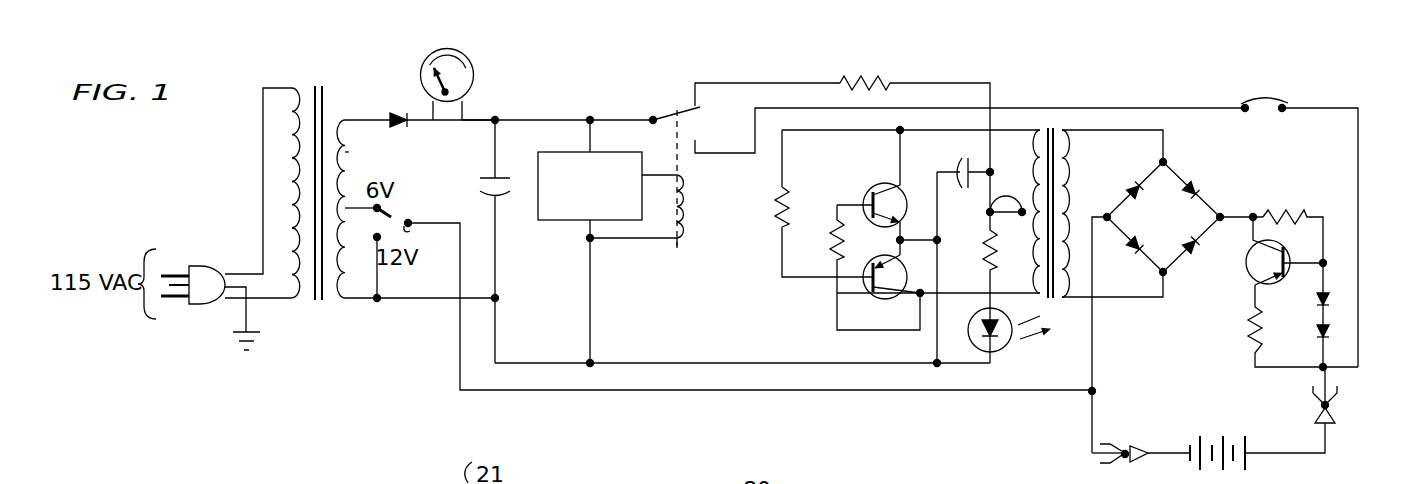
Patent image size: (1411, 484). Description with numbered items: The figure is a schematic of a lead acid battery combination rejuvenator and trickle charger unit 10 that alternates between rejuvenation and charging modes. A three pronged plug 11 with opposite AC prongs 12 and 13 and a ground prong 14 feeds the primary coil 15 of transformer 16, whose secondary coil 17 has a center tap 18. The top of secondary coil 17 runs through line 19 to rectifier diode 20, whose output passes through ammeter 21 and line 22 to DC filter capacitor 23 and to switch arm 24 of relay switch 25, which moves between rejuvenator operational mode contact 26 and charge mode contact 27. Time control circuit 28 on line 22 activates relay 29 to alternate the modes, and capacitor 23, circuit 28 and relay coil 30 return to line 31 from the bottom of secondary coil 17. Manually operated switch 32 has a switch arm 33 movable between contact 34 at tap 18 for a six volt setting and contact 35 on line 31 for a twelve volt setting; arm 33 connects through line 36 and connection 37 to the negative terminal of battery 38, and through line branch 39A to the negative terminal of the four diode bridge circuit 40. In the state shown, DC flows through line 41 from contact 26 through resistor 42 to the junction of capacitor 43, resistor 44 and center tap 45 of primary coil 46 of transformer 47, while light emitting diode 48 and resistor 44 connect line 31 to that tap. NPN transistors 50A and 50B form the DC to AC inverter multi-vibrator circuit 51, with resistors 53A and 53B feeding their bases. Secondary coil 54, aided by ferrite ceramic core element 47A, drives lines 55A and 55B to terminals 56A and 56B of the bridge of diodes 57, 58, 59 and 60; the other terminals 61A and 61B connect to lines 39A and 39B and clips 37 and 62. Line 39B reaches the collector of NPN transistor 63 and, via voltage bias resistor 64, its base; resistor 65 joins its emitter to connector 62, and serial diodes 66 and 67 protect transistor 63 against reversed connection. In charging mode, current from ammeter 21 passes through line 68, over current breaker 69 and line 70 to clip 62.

The lead acid battery combination rejuvenator and trickle charger unit 10 is at (1200, 92).
The three pronged plug 11 is at (217, 265).
The AC prong 12 is at (170, 274).
The AC prong 13 is at (168, 300).
The ground prong 14 is at (181, 298).
The primary coil 15 is at (296, 164).
The transformer 16 is at (309, 78).
The secondary coil 17 is at (350, 156).
The center tap 18 is at (350, 207).
The line 19 is at (354, 118).
The rectifier diode 20 is at (400, 108).
The ammeter 21 is at (473, 68).
The line 22 is at (478, 118).
The DC filter capacitor 23 is at (484, 168).
The switch arm 24 is at (668, 113).
The relay switch 25 is at (668, 90).
The rejuvenator operational mode contact 26 is at (695, 101).
The charge mode contact 27 is at (698, 138).
The time control circuit 28 is at (555, 222).
The relay 29 is at (690, 198).
The relay coil 30 is at (684, 233).
The line 31 is at (401, 302).
The manually operated switch 32 is at (411, 218).
The switch arm 33 is at (409, 226).
The contact 34 is at (383, 204).
The contact 35 is at (375, 243).
The line 36 is at (458, 350).
The connection 37 is at (1125, 448).
The battery 38 is at (1227, 432).
The line branch 39A is at (1090, 425).
The line 39B is at (1233, 223).
The four diode bridge circuit 40 is at (1203, 172).
The line 41 is at (790, 82).
The resistor 42 is at (884, 73).
The capacitor 43 is at (955, 165).
The resistor 44 is at (984, 250).
The center tap 45 is at (988, 198).
The primary coil 46 is at (1030, 190).
The transformer 47 is at (1050, 126).
The ferrite ceramic core element 47A is at (1056, 135).
The light emitting diode 48 is at (1006, 346).
The NPN transistor 50A is at (877, 188).
The NPN transistor 50B is at (872, 293).
The DC to AC inverter multi-vibrator circuit 51 is at (775, 272).
The resistor 53A is at (774, 197).
The resistor 53B is at (836, 223).
The secondary coil 54 is at (1082, 146).
The line 55A is at (1155, 133).
The line 55B is at (1110, 300).
The terminal 56A is at (1170, 158).
The terminal 56B is at (1168, 278).
The diode 57 is at (1127, 186).
The diode 58 is at (1148, 236).
The diode 59 is at (1186, 237).
The diode 60 is at (1206, 184).
The terminal 61A is at (1107, 223).
The terminal 61B is at (1222, 212).
The connector clip 62 is at (1315, 412).
The NPN transistor 63 is at (1252, 275).
The voltage bias resistor 64 is at (1300, 212).
The resistor 65 is at (1250, 327).
The diode 66 is at (1314, 299).
The diode 67 is at (1313, 333).
The line 68 is at (1163, 108).
The over current breaker 69 is at (1262, 95).
The line 70 is at (1318, 107).